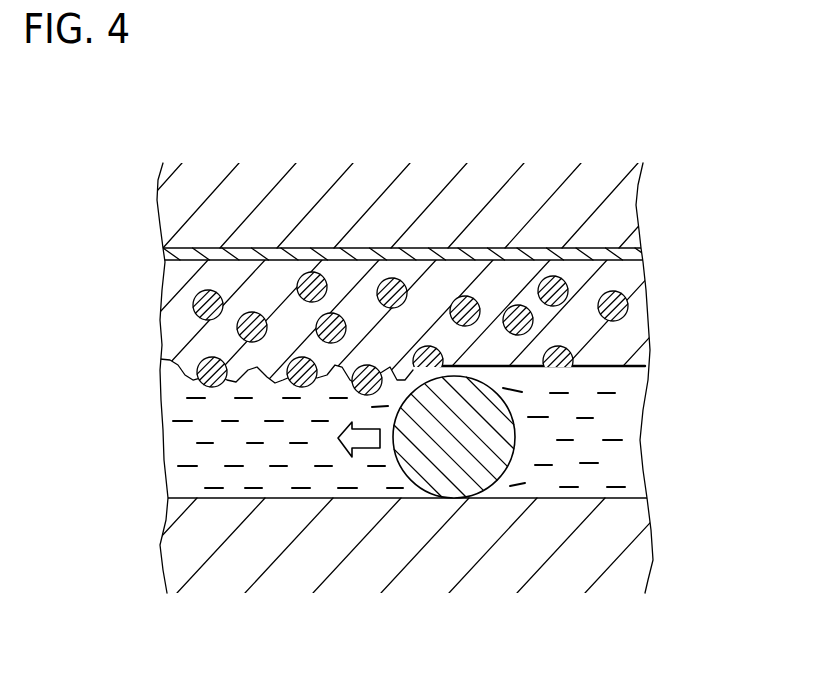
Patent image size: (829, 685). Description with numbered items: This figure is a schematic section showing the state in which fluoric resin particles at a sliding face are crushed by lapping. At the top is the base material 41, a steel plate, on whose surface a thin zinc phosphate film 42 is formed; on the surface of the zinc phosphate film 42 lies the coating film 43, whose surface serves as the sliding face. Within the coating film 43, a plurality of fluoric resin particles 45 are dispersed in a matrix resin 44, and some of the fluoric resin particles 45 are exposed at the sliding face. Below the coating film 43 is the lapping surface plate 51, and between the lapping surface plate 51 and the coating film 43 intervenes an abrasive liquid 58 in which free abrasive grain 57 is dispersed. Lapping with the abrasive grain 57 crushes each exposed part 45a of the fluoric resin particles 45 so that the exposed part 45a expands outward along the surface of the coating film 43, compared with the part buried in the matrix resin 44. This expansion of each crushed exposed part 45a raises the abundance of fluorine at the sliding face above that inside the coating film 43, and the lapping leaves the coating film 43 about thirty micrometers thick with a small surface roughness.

The base material 41 is at (563, 200).
The zinc phosphate film 42 is at (585, 248).
The coating film 43 is at (640, 270).
The matrix resin 44 is at (172, 278).
The fluoric resin particles 45 is at (392, 280).
The exposed part 45a is at (590, 372).
The free abrasive grain 57 is at (510, 410).
The abrasive liquid 58 is at (175, 452).
The lapping surface plate 51 is at (474, 563).